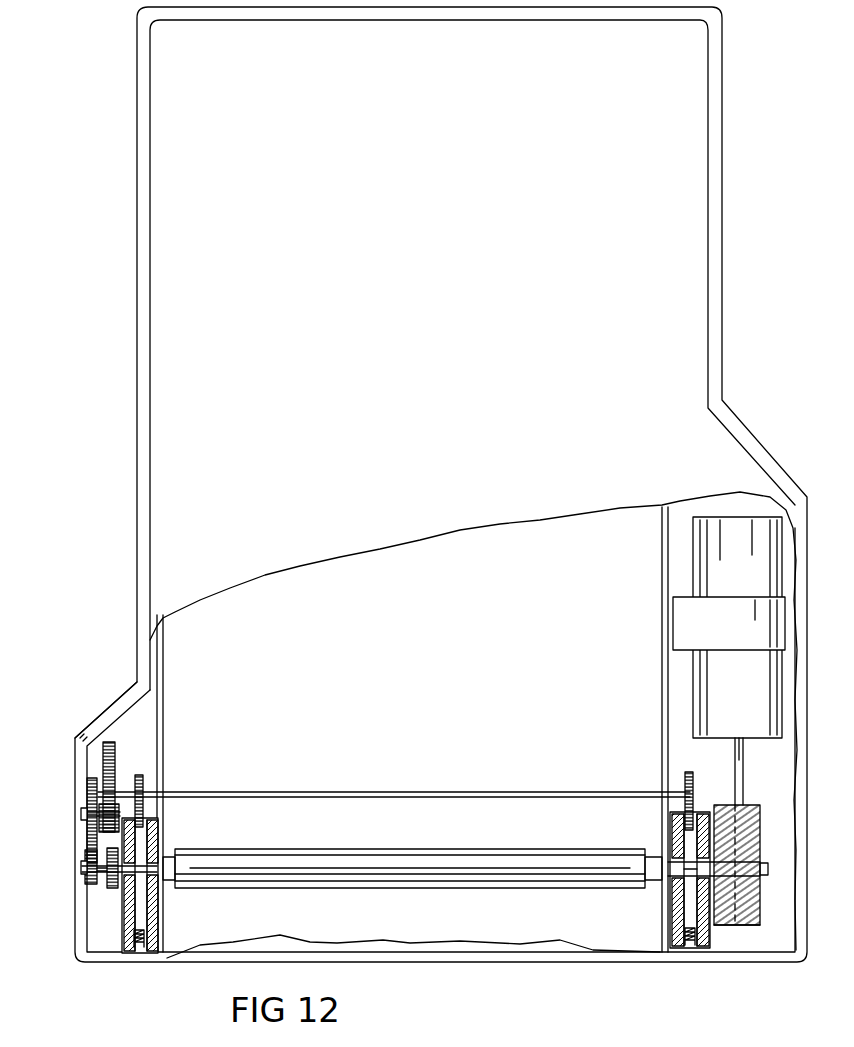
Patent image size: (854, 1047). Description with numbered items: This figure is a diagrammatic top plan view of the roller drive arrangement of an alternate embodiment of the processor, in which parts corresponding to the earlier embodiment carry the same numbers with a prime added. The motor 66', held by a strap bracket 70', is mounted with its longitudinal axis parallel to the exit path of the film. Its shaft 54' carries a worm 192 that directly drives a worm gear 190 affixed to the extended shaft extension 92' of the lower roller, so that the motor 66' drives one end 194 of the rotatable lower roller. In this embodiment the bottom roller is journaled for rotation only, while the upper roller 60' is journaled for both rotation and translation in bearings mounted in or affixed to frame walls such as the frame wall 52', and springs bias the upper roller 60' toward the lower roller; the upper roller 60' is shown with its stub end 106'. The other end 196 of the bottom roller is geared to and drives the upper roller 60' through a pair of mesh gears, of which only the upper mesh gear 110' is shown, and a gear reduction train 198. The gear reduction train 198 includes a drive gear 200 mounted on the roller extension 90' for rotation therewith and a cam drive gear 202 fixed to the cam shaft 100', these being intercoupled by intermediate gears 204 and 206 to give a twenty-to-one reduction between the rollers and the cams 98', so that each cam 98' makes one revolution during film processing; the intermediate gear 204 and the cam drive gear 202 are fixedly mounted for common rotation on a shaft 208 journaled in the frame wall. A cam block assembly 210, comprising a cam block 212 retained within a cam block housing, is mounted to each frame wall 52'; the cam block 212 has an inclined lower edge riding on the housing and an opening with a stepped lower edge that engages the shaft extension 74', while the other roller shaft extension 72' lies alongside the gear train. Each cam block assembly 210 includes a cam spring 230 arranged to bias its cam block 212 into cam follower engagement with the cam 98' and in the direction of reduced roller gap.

The frame wall 52' is at (412, 729).
The shaft 54' is at (759, 771).
The upper roller 60' is at (410, 854).
The motor 66' is at (737, 627).
The strap bracket 70' is at (732, 607).
The shaft extension 72' is at (77, 907).
The shaft extension 74' is at (706, 906).
The roller extension 90' is at (100, 894).
The shaft extension 92' is at (754, 883).
The cam 98' is at (432, 786).
The cam shaft 100' is at (394, 778).
The roller stub shaft 106' is at (412, 886).
The mesh gear 110' is at (118, 898).
The worm gear 190 is at (757, 912).
The worm 192 is at (752, 806).
The end of lower roller 194 is at (777, 852).
The other end of bottom roller 196 is at (86, 868).
The gear reduction train 198 is at (93, 748).
The drive gear 200 is at (86, 880).
The cam drive gear 202 is at (112, 745).
The intermediate gear 204 is at (90, 793).
The intermediate gear 206 is at (100, 828).
The shaft 208 is at (83, 813).
The cam block assembly 210 is at (162, 842).
The cam block 212 is at (143, 920).
The cam spring 230 is at (137, 947).